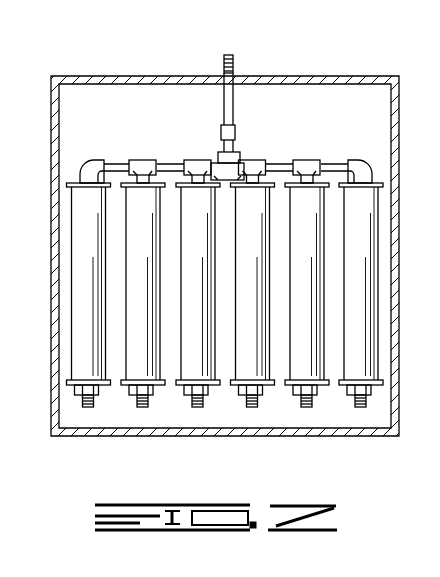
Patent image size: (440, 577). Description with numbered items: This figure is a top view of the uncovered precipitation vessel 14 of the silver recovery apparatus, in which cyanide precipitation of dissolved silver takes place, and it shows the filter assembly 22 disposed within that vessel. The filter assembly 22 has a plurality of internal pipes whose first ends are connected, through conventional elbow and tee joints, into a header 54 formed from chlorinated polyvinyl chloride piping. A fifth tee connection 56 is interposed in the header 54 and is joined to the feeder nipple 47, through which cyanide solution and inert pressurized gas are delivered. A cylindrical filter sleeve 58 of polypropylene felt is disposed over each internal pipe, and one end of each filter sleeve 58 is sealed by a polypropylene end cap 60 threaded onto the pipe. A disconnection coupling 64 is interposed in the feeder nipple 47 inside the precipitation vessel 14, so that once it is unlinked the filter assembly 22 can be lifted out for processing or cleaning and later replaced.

The precipitation vessel 14 is at (340, 70).
The filter assembly 22 is at (159, 130).
The feeder nipple 47 is at (232, 108).
The header 54 is at (114, 164).
The fifth tee connection 56 is at (233, 163).
The filter sleeve 58 is at (72, 263).
The end cap 60 is at (97, 388).
The disconnection coupling 64 is at (219, 132).